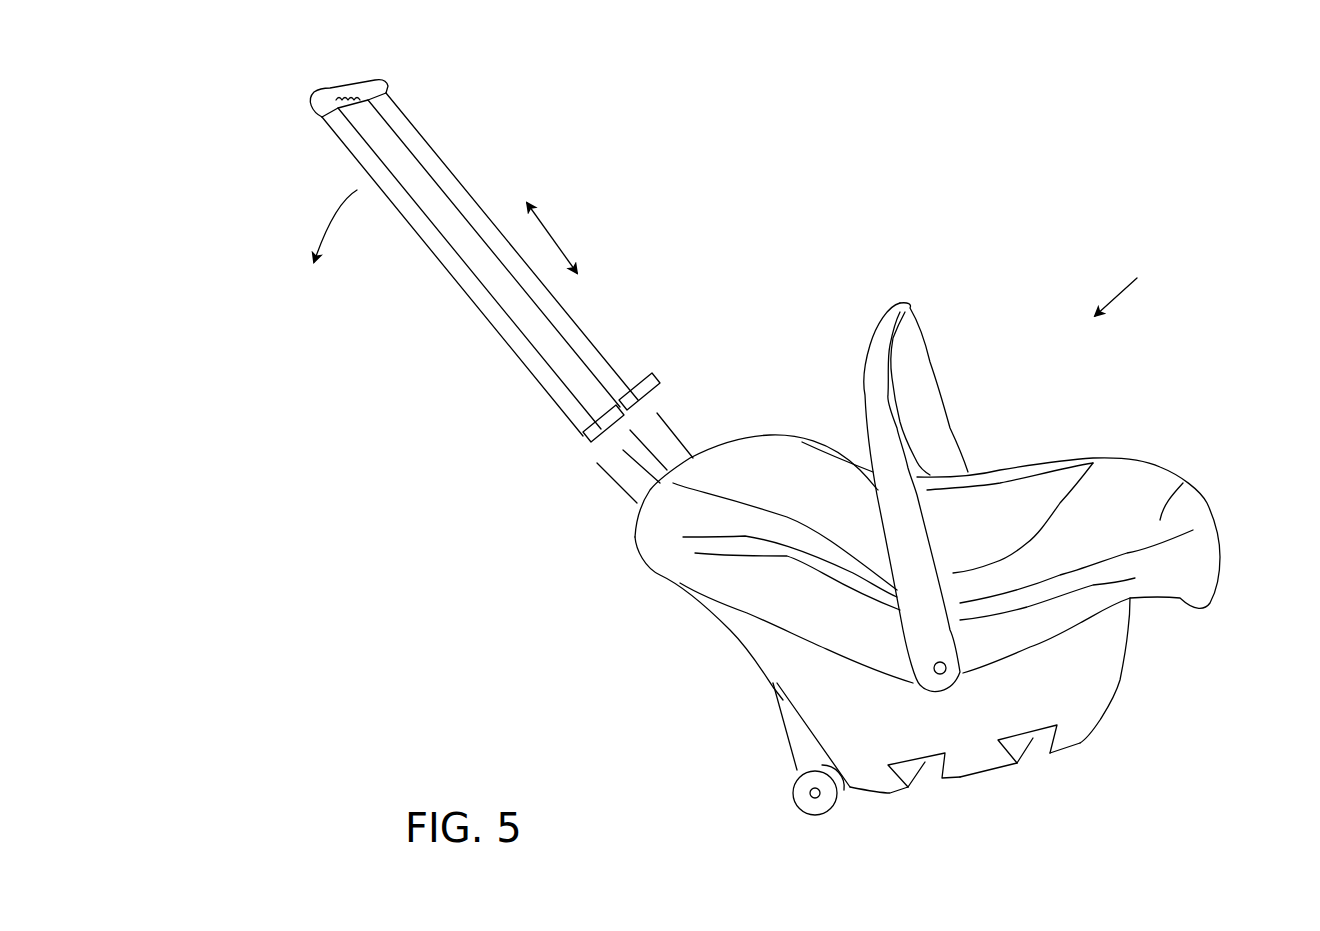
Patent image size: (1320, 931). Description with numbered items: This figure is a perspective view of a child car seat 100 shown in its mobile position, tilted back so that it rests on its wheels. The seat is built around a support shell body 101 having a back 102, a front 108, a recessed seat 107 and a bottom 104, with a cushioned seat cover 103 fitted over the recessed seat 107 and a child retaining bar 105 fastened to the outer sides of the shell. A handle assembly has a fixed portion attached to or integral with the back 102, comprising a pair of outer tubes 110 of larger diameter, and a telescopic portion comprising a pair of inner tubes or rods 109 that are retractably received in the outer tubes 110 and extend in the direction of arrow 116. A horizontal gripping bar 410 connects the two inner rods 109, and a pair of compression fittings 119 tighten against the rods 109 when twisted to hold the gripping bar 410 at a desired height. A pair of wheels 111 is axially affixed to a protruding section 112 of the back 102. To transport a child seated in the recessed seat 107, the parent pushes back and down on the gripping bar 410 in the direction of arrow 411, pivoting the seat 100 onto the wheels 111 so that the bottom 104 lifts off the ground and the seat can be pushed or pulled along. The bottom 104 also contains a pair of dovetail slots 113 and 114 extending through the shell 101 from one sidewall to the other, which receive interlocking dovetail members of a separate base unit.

The child car seat 100 is at (1141, 289).
The support shell body 101 is at (1080, 697).
The back 102 is at (723, 626).
The cushioned seat cover 103 is at (1020, 470).
The bottom 104 is at (977, 775).
The child retaining bar 105 is at (938, 380).
The recessed seat 107 is at (1183, 483).
The front 108 is at (1127, 667).
The inner tubes or rods 109 is at (533, 300).
The outer tubes 110 is at (677, 436).
The wheels 111 is at (795, 794).
The protruding section 112 is at (788, 742).
The dovetail slot 113 is at (925, 763).
The dovetail slot 114 is at (1036, 745).
The arrow 116 is at (557, 224).
The compression fittings 119 is at (664, 394).
The horizontal gripping bar 410 is at (386, 86).
The arrow 411 is at (333, 203).